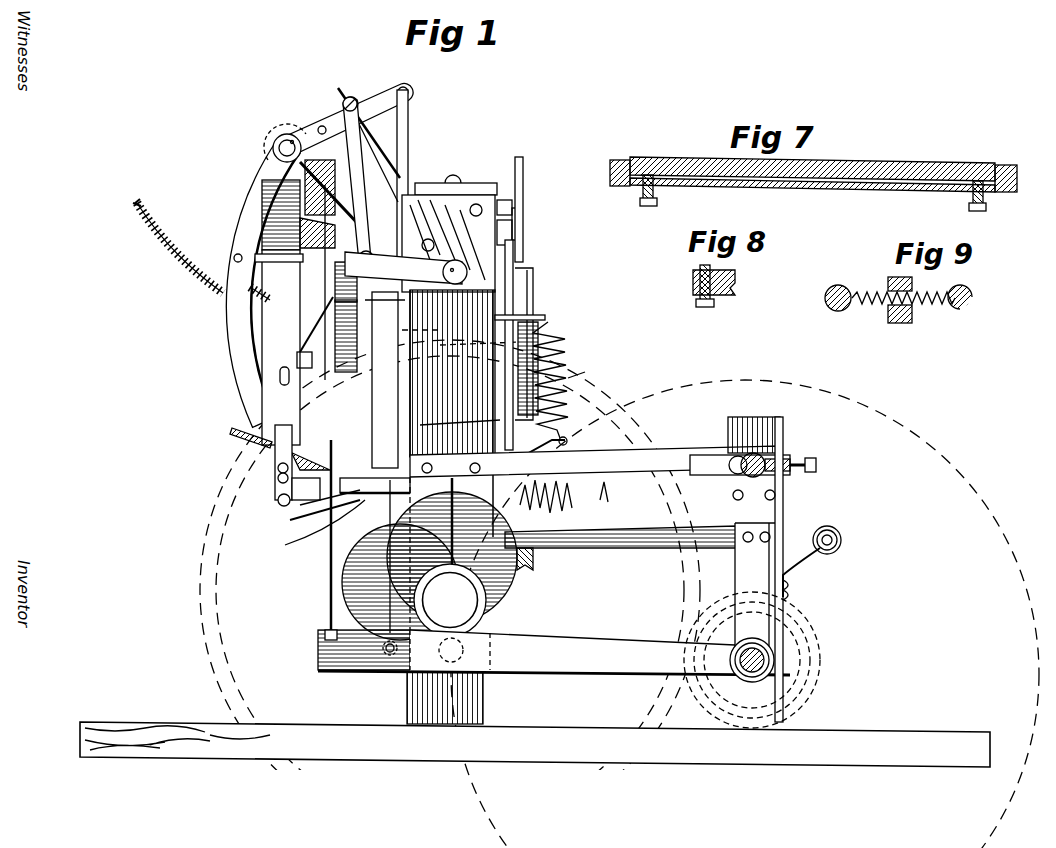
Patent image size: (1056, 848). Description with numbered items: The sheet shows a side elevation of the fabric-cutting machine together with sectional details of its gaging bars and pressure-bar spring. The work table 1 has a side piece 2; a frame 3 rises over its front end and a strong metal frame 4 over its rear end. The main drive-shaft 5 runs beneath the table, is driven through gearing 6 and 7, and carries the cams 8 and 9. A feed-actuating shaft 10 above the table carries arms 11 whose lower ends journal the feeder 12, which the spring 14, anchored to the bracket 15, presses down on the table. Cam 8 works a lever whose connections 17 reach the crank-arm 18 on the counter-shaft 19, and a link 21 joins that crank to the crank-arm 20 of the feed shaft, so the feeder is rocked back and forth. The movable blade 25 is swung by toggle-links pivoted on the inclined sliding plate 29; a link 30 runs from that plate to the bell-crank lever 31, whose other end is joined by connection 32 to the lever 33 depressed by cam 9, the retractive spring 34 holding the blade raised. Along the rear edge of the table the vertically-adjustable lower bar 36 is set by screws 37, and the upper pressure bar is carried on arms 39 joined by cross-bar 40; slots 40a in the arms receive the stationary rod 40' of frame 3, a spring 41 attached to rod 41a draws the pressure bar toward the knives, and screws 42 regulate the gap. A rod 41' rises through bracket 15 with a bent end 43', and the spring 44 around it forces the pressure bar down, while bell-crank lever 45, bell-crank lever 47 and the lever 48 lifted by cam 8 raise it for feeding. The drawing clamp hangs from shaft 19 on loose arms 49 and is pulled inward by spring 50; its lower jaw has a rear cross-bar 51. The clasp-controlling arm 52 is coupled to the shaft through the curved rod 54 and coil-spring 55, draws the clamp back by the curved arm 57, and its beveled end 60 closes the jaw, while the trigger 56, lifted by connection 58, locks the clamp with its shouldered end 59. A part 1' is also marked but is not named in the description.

In FIG. 1, the work table 1 is at (535, 744).
In FIG. 7, the work table 1 is at (828, 176).
In FIG. 1, the cam 1' is at (375, 612).
In FIG. 1, the side piece 2 is at (569, 496).
In FIG. 1, the frame 3 is at (754, 435).
In FIG. 1, the metal frame 4 is at (426, 326).
In FIG. 1, the main drive-shaft 5 is at (450, 600).
In FIG. 1, the gearing 6 is at (815, 668).
In FIG. 1, the gearing 7 is at (683, 570).
In FIG. 1, the cam 8 is at (400, 582).
In FIG. 1, the cam 9 is at (452, 555).
In FIG. 1, the feed-actuating shaft 10 is at (455, 262).
In FIG. 1, the arms 11 is at (490, 445).
In FIG. 1, the feeder 12 is at (570, 465).
In FIG. 1, the spring 14 is at (555, 357).
In FIG. 1, the bracket 15 is at (530, 317).
In FIG. 1, the connections 17 is at (409, 131).
In FIG. 1, the crank-arm 18 is at (412, 100).
In FIG. 1, the counter-shaft 19 is at (282, 144).
In FIG. 1, the crank-arm 20 is at (406, 268).
In FIG. 1, the link 21 is at (360, 198).
In FIG. 1, the movable blade 25 is at (420, 386).
In FIG. 1, the inclined sliding plate 29 is at (480, 335).
In FIG. 1, the link 30 is at (356, 336).
In FIG. 1, the bell-crank lever 31 is at (375, 392).
In FIG. 1, the connection 32 is at (330, 548).
In FIG. 1, the lever 33 is at (358, 672).
In FIG. 1, the retractive spring 34 is at (335, 280).
In FIG. 1, the lower bar 36 is at (460, 430).
In FIG. 7, the lower bar 36 is at (812, 163).
In FIG. 7, the screws 37 is at (646, 204).
In FIG. 1, the arms 39 is at (740, 464).
In FIG. 1, the cross-bar 40 is at (798, 449).
In FIG. 9, the cross-bar 40 is at (904, 315).
In FIG. 1, the stationary rod 40' is at (728, 480).
In FIG. 9, the stationary rod 40' is at (835, 313).
In FIG. 1, the longitudinal slots 40a is at (730, 455).
In FIG. 9, the spring 41 is at (903, 280).
In FIG. 1, the rod 41' is at (558, 440).
In FIG. 9, the rod 41a is at (973, 298).
In FIG. 1, the screws 42 is at (816, 466).
In FIG. 1, the bent end 43' is at (543, 288).
In FIG. 1, the spring 44 is at (540, 330).
In FIG. 1, the bell-crank lever 45 is at (513, 282).
In FIG. 1, the bell-crank lever 47 is at (585, 374).
In FIG. 1, the lever 48 is at (615, 552).
In FIG. 1, the loose arms 49 is at (245, 346).
In FIG. 1, the spring 50 is at (295, 270).
In FIG. 1, the cross-bar 51 is at (284, 500).
In FIG. 1, the arm 52 is at (281, 312).
In FIG. 1, the curved rod 54 is at (145, 205).
In FIG. 1, the coil-spring 55 is at (196, 256).
In FIG. 1, the trigger 56 is at (309, 362).
In FIG. 1, the curved arm 57 is at (243, 442).
In FIG. 1, the connection 58 is at (328, 300).
In FIG. 1, the shouldered end 59 is at (322, 512).
In FIG. 1, the beveled end 60 is at (299, 484).